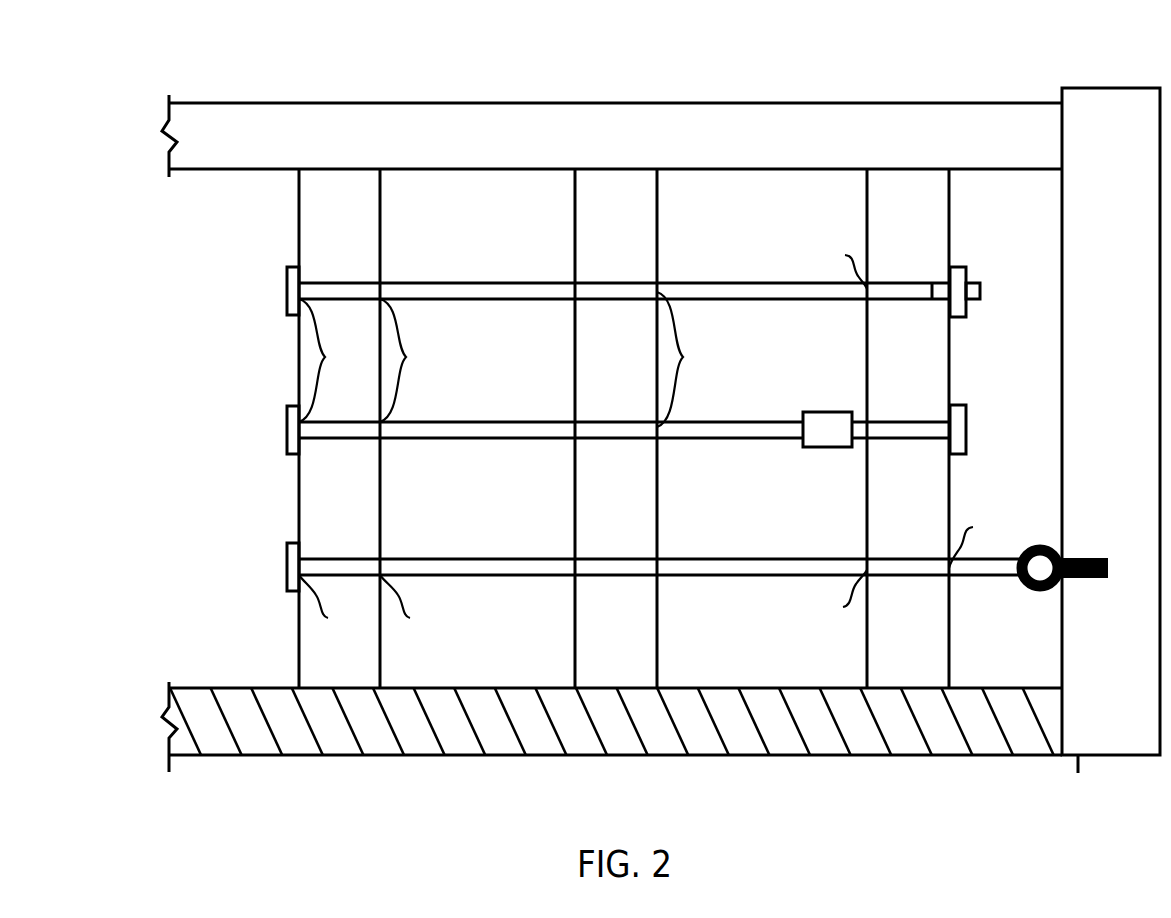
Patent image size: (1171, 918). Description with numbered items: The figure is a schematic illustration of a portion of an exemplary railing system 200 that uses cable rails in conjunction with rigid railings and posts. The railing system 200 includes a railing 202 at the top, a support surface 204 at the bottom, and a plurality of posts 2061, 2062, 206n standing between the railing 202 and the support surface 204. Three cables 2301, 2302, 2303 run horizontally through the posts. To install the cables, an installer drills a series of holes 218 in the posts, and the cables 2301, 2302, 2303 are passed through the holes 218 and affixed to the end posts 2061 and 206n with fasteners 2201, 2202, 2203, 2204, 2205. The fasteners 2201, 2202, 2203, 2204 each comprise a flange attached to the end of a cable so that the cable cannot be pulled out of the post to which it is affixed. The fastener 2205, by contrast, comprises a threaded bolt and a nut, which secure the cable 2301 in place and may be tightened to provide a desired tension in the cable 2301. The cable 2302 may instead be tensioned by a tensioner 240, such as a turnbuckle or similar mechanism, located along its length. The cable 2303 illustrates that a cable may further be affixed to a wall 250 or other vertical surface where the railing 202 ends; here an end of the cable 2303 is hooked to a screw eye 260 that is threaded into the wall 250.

The railing system 200 is at (56, 43).
The railing 202 is at (612, 136).
The support surface 204 is at (612, 727).
The post 2061 is at (339, 428).
The post 2062 is at (616, 428).
The post 206n is at (908, 428).
The holes 218 is at (656, 436).
The fastener 2201 is at (287, 293).
The fastener 2202 is at (287, 433).
The fastener 2203 is at (287, 570).
The fastener 2204 is at (950, 405).
The fastener 2205 is at (966, 283).
The cable 2301 is at (472, 283).
The cable 2302 is at (472, 422).
The cable 2303 is at (472, 559).
The tensioner 240 is at (827, 429).
The wall 250 is at (1111, 430).
The screw eye 260 is at (1088, 558).